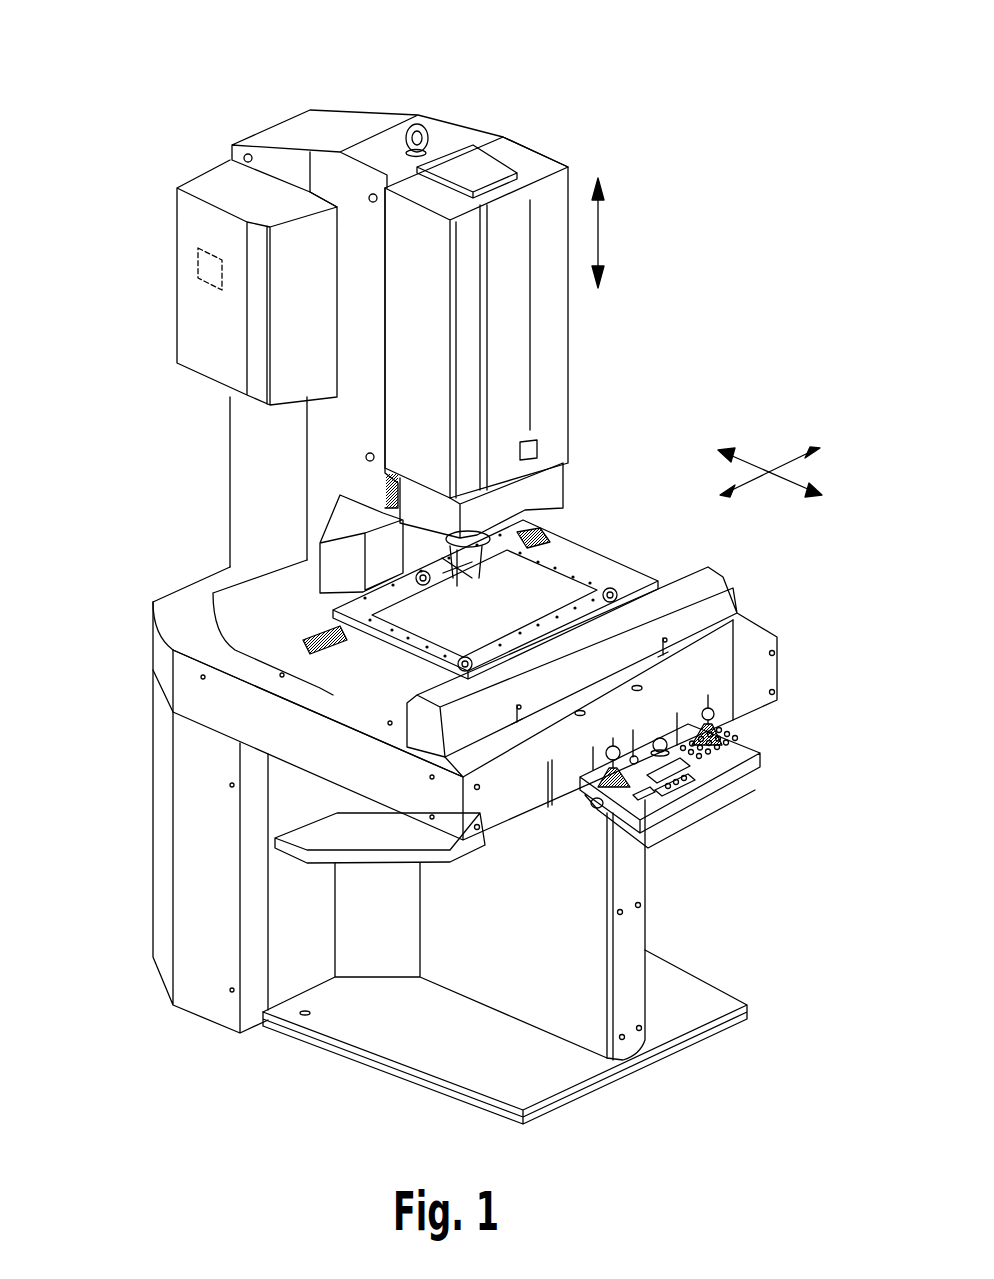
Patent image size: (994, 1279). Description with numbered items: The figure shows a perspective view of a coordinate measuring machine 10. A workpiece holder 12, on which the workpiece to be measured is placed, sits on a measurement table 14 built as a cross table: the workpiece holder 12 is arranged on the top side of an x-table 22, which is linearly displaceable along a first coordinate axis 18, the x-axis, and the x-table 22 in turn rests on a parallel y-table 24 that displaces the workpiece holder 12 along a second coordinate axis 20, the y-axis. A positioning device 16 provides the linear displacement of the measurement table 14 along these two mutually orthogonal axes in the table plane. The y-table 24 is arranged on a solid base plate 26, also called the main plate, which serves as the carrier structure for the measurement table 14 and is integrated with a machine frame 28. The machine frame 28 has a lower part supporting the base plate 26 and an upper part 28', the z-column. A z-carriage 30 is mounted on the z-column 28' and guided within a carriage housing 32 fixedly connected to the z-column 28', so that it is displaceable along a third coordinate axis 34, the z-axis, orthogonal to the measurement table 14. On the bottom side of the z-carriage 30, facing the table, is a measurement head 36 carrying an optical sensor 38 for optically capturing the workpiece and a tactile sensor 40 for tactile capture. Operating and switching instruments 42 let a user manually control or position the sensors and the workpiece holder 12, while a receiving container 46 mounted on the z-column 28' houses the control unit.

The coordinate measuring machine 10 is at (601, 115).
The workpiece holder 12 is at (464, 615).
The measurement table 14 is at (604, 574).
The positioning device 16 is at (722, 590).
The first coordinate axis 18 is at (770, 455).
The second coordinate axis 20 is at (770, 495).
The x-table 22 is at (335, 618).
The y-table 24 is at (245, 607).
The base plate 26 is at (260, 720).
The machine frame 28 is at (413, 863).
The upper part of the machine frame 28' is at (274, 377).
The z-carriage 30 is at (555, 480).
The carriage housing 32 is at (552, 336).
The third coordinate axis 34 is at (607, 236).
The measurement head 36 is at (548, 541).
The optical sensor 38 is at (447, 546).
The tactile sensor 40 is at (452, 570).
The operating and switching instruments 42 is at (710, 780).
The receiving container 46 is at (197, 308).